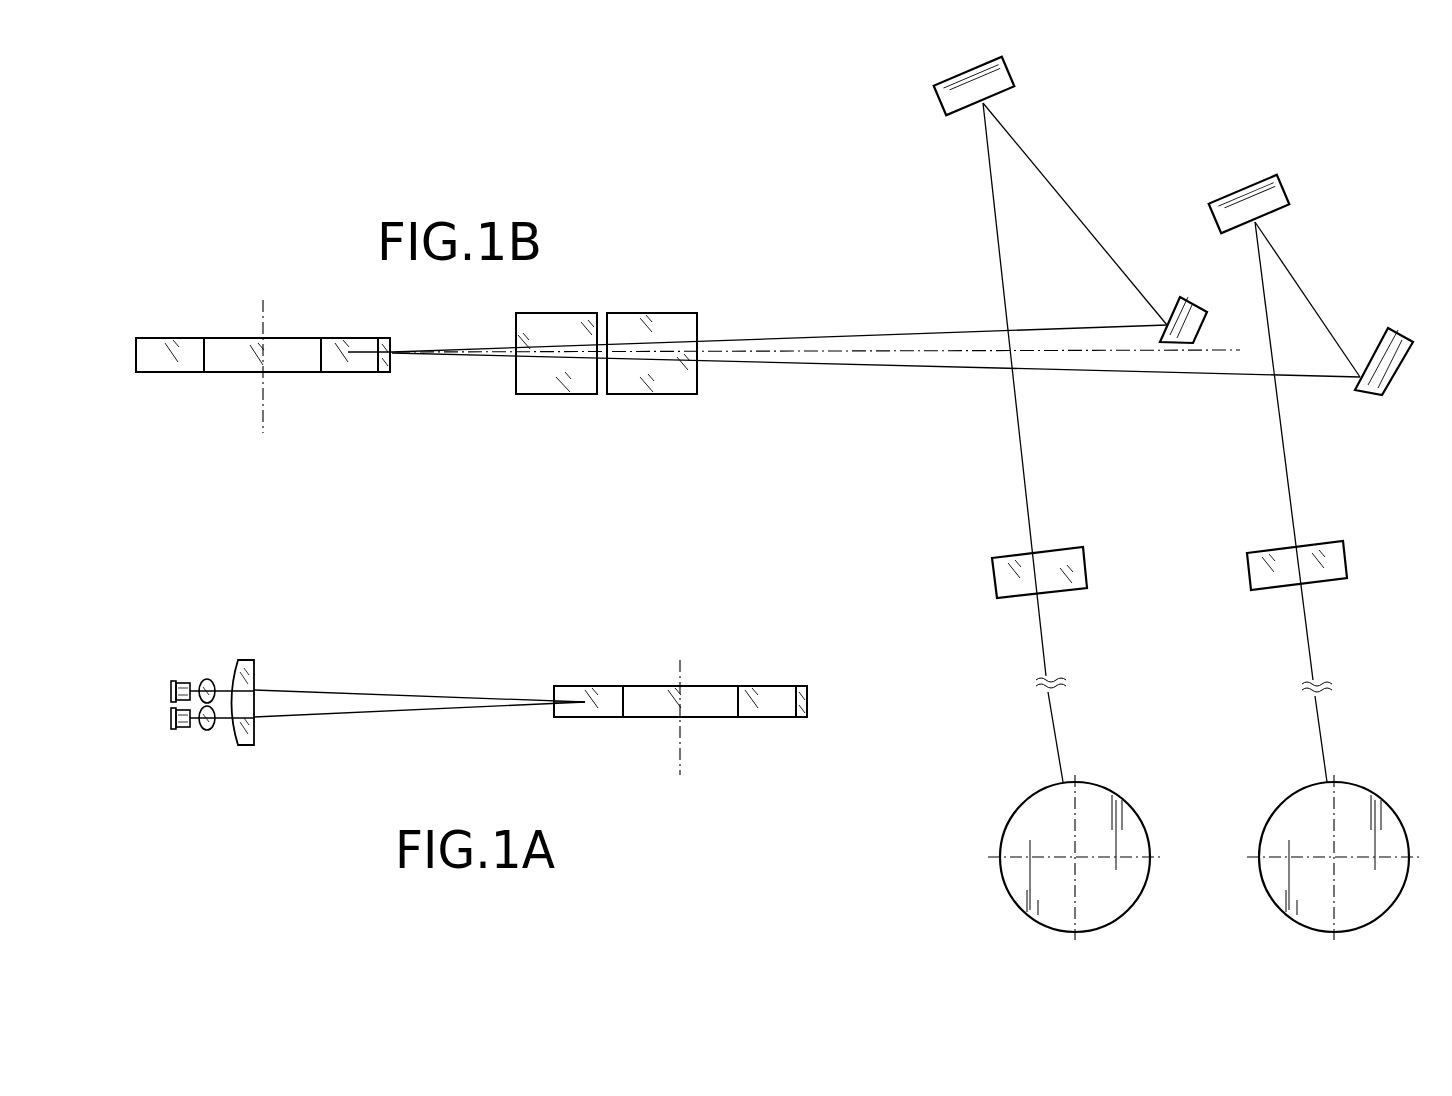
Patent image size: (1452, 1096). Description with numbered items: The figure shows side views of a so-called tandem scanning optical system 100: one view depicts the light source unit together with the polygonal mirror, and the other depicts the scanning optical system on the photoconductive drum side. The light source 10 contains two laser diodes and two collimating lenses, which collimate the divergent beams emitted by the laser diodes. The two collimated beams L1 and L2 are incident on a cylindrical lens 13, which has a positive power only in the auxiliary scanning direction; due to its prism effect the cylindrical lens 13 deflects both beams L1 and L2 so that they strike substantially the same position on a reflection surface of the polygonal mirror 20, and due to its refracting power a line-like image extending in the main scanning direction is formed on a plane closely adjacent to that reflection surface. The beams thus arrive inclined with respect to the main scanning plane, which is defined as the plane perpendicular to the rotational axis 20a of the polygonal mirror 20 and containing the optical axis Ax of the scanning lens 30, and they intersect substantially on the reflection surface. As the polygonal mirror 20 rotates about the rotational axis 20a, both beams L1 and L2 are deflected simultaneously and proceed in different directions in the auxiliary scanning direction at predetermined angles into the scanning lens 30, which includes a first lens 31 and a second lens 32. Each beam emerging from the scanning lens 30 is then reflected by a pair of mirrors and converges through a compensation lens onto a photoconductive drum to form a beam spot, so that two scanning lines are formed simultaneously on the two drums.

In FIG. 1B, the scanning optical system 100 is at (722, 176).
In FIG. 1A, the light source 10 is at (179, 760).
In FIG. 1A, the cylindrical lens 13 is at (257, 677).
In FIG. 1B, the polygonal mirror 20 is at (173, 375).
In FIG. 1A, the polygonal mirror 20 is at (590, 720).
In FIG. 1B, the rotational axis 20a is at (268, 410).
In FIG. 1A, the rotational axis 20a is at (682, 748).
In FIG. 1B, the scanning lens 30 is at (606, 406).
In FIG. 1B, the first lens 31 is at (552, 380).
In FIG. 1B, the second lens 32 is at (652, 383).
In FIG. 1B, the beam L1 is at (845, 368).
In FIG. 1A, the beam L1 is at (405, 692).
In FIG. 1B, the beam L2 is at (847, 337).
In FIG. 1A, the beam L2 is at (405, 715).
In FIG. 1B, the optical axis Ax is at (928, 352).